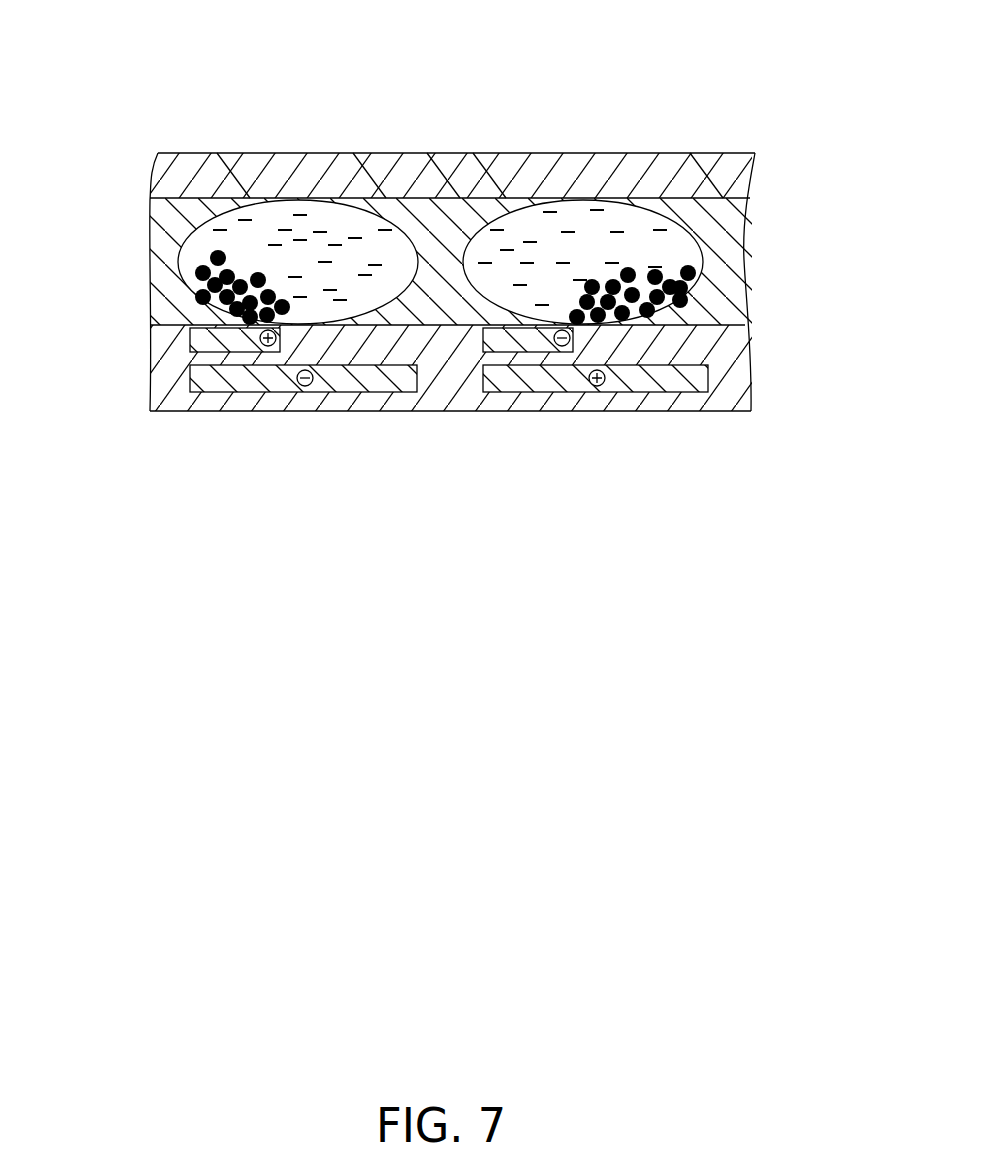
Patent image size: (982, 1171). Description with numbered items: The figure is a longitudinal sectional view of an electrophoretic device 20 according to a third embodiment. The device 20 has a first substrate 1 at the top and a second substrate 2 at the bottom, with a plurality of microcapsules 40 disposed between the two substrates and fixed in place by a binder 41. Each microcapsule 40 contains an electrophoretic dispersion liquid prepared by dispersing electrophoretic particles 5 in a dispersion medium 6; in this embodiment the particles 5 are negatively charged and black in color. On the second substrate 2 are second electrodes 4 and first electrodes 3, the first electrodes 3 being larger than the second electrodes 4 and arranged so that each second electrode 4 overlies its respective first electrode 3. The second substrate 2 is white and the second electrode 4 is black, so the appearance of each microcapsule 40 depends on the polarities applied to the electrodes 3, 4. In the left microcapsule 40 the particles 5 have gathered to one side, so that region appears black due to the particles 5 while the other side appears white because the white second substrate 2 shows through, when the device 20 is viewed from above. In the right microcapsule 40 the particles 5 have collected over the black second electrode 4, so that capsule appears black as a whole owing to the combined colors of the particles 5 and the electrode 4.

The electrophoretic device 20 is at (728, 104).
The first substrate 1 is at (579, 177).
The second substrate 2 is at (720, 382).
The first electrode 3 is at (253, 380).
The second electrode 4 is at (198, 340).
The electrophoretic particles 5 is at (690, 291).
The dispersion medium 6 is at (283, 232).
The microcapsules 40 is at (479, 213).
The binder 41 is at (157, 227).